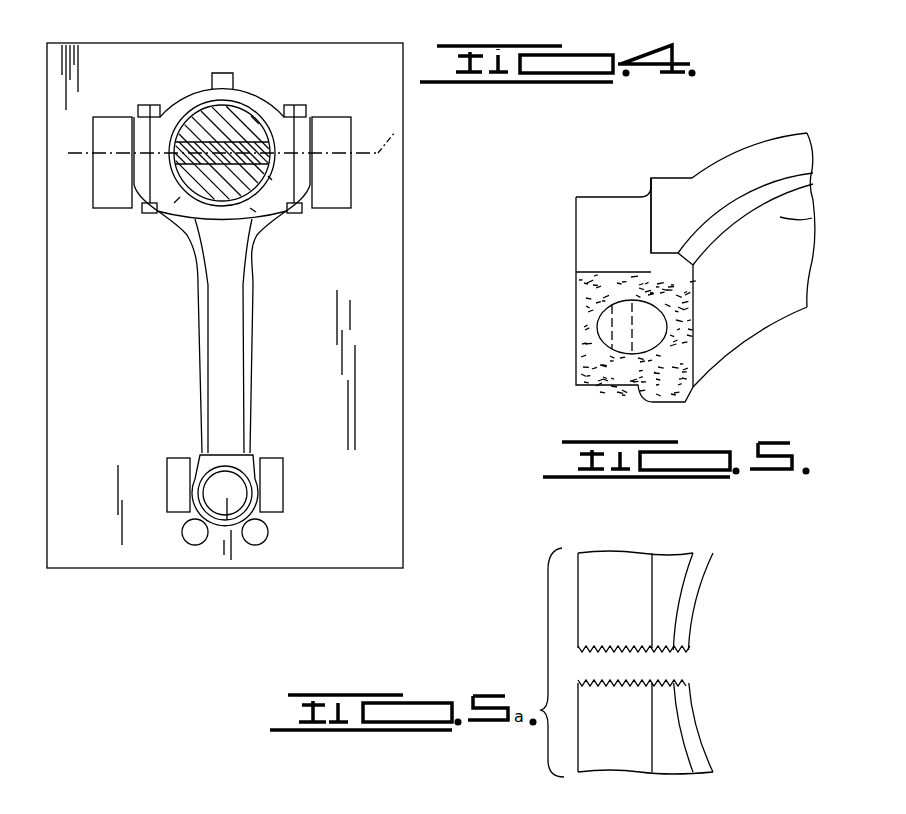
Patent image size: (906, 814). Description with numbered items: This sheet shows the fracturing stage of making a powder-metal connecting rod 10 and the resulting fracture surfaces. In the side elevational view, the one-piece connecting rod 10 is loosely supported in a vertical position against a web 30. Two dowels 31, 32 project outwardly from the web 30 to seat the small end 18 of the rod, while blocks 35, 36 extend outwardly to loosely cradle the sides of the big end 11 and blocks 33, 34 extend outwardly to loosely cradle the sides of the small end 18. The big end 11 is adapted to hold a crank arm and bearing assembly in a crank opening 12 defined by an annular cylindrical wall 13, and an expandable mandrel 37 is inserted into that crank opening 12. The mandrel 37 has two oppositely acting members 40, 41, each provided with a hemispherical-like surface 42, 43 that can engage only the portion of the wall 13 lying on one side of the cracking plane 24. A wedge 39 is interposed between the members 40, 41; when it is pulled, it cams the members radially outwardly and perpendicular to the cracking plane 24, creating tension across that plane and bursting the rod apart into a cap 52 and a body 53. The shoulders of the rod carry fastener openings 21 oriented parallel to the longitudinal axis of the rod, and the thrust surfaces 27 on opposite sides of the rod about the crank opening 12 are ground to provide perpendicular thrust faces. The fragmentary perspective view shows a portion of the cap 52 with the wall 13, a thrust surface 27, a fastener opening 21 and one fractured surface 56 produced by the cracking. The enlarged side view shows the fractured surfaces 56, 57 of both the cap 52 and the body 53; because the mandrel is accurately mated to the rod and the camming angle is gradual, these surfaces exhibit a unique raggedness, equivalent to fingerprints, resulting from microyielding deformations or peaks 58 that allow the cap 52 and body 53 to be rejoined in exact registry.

In FIG. 4, the connecting rod 10 is at (278, 350).
In FIG. 4, the big end 11 is at (268, 88).
In FIG. 5, the crank opening 12 is at (790, 219).
In FIG. 5, the annular cylindrical wall 13 is at (768, 272).
In FIG. 4, the small end 18 is at (262, 476).
In FIG. 5, the fastener openings 21 is at (662, 329).
In FIG. 4, the cracking plane 24 is at (395, 132).
In FIG. 5, the thrust surfaces 27 is at (689, 205).
In FIG. 4, the web 30 is at (67, 467).
In FIG. 4, the dowel 31 is at (195, 537).
In FIG. 4, the dowel 32 is at (258, 537).
In FIG. 4, the block 33 is at (177, 463).
In FIG. 4, the block 34 is at (275, 512).
In FIG. 4, the block 35 is at (102, 174).
In FIG. 4, the block 36 is at (342, 193).
In FIG. 4, the expandable mandrel 37 is at (180, 197).
In FIG. 4, the wedge 39 is at (270, 178).
In FIG. 4, the mandrel member 40 is at (192, 110).
In FIG. 4, the mandrel member 41 is at (213, 193).
In FIG. 4, the hemispherical-like surface 42 is at (238, 110).
In FIG. 4, the hemispherical-like surface 43 is at (253, 210).
In FIG. 5, the cap 52 is at (768, 134).
In FIG. 4, the body 53 is at (223, 247).
In FIG. 5A, the body 53 is at (665, 718).
In FIG. 5, the fractured surface 56 is at (593, 365).
In FIG. 5A, the fractured surface 56 is at (688, 653).
In FIG. 4, the fractured surface 57 is at (282, 120).
In FIG. 5A, the fractured surface 57 is at (670, 580).
In FIG. 5A, the peaks 58 is at (643, 657).